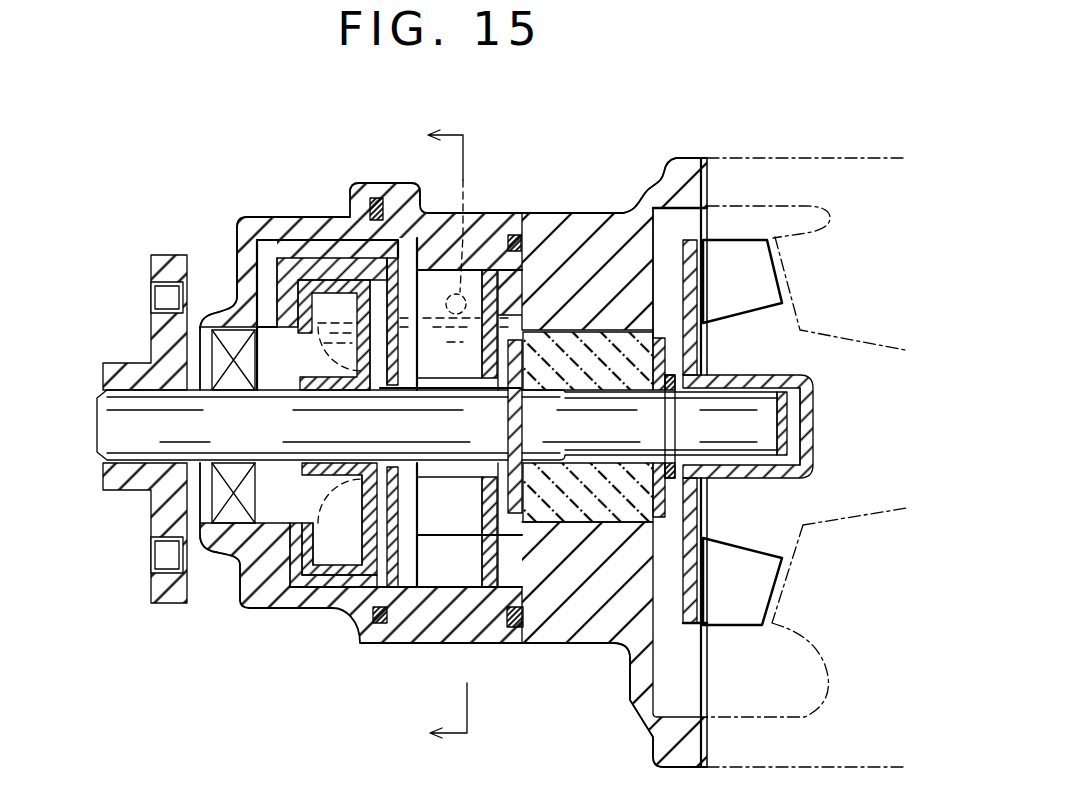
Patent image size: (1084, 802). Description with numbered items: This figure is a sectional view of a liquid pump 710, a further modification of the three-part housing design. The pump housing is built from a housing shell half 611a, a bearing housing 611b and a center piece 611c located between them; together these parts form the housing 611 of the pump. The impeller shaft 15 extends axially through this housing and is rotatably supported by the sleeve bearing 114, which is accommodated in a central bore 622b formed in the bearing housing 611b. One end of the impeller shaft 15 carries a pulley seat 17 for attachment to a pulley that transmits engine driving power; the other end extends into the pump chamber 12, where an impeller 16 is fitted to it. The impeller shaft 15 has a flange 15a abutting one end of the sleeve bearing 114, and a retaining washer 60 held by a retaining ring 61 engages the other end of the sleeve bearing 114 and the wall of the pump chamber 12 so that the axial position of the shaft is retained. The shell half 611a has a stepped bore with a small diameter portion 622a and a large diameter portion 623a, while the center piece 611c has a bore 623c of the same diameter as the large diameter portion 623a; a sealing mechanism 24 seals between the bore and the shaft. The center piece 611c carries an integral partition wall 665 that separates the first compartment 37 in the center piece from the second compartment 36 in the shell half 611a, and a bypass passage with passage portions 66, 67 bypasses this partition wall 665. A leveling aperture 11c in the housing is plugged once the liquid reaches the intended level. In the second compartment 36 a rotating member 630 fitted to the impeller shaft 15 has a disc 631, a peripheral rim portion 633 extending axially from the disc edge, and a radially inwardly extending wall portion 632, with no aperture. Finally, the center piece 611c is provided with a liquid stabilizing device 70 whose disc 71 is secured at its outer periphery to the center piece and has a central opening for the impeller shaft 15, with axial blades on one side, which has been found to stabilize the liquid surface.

The liquid pump 710 is at (272, 210).
The rotating member 630 is at (322, 250).
The housing 611 is at (378, 183).
The partition wall 665 is at (383, 307).
The disc 631 is at (352, 283).
The leveling aperture 11c is at (462, 430).
The center piece 611c is at (485, 237).
The passage portion 67 is at (412, 256).
The disc 71 is at (525, 240).
The flange 15a is at (545, 250).
The bearing housing 611b is at (603, 232).
The housing shell half 611a is at (253, 227).
The pump chamber 12 is at (680, 214).
The passage portion 66 is at (263, 267).
The impeller 16 is at (753, 285).
The second compartment 36 is at (273, 360).
The retaining ring 61 is at (670, 380).
The impeller shaft 15 is at (231, 440).
The retaining washer 60 is at (668, 508).
The pulley seat 17 is at (163, 593).
The sealing mechanism 24 is at (233, 508).
The small diameter portion 622a is at (278, 523).
The wall portion 632 is at (323, 577).
The peripheral rim portion 633 is at (345, 577).
The large diameter portion 623a is at (372, 590).
The first compartment 37 is at (413, 565).
The liquid stabilizing device 70 is at (453, 547).
The bore 623c is at (510, 592).
The central bore 622b is at (600, 523).
The sleeve bearing 114 is at (623, 525).